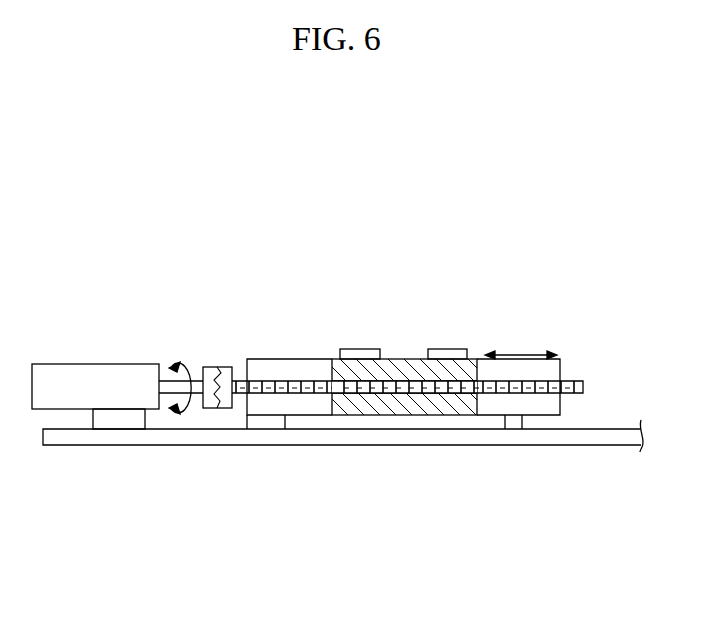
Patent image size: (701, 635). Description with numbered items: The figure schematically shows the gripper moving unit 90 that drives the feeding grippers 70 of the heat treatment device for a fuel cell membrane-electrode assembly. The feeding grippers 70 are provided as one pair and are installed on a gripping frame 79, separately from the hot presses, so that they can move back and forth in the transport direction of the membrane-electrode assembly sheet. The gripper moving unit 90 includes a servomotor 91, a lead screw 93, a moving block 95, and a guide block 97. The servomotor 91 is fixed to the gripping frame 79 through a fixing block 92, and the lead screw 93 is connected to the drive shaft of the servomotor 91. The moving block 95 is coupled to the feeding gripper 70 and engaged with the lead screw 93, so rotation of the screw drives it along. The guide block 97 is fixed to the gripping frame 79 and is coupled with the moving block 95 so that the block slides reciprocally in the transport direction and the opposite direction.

The gripper moving unit 90 is at (328, 250).
The servomotor 91 is at (73, 373).
The fixing block 92 is at (108, 423).
The lead screw 93 is at (263, 395).
The moving block 95 is at (387, 402).
The guide block 97 is at (505, 415).
The gripping frame 79 is at (438, 437).
The feeding gripper 70 is at (358, 349).